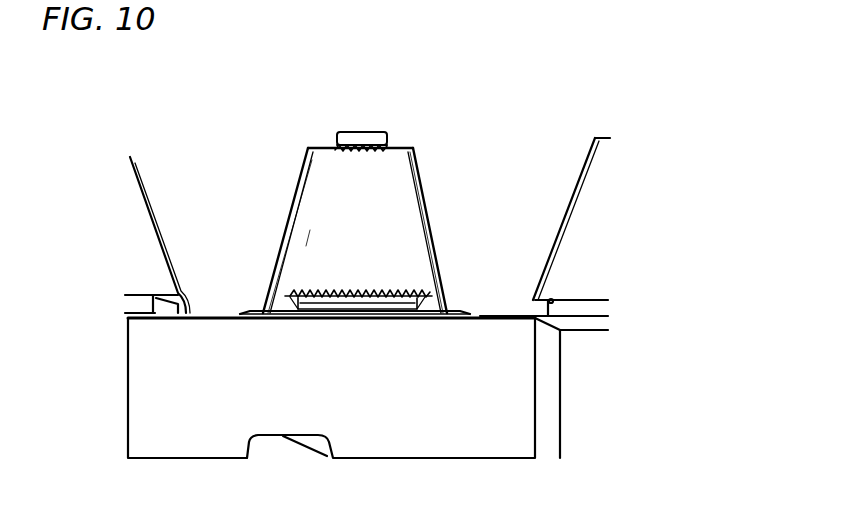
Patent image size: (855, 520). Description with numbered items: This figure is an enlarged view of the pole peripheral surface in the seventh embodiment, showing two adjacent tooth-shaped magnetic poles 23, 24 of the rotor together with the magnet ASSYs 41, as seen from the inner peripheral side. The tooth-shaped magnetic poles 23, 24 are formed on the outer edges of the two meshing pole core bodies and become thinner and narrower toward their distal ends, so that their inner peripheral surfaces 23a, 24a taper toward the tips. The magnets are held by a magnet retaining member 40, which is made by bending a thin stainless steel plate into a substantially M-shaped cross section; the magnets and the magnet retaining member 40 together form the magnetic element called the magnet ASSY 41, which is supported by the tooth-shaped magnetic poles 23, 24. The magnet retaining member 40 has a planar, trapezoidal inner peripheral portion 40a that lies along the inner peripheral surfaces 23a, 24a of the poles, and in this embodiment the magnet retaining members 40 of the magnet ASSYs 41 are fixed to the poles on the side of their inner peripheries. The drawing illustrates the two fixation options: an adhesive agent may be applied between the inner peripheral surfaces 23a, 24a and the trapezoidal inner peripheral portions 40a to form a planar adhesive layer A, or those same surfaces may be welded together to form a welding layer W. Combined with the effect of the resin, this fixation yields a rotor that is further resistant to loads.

The tooth-shaped magnetic pole 23 is at (364, 131).
The tooth-shaped magnetic pole 24 is at (382, 114).
The inner peripheral surface 23a is at (386, 140).
The inner peripheral surface 24a is at (437, 129).
The welding layer W is at (371, 152).
The magnet retaining member 40 is at (304, 167).
The inner peripheral portion 40a is at (312, 195).
The adhesive layer A is at (315, 239).
The magnet ASSY 41 is at (415, 214).